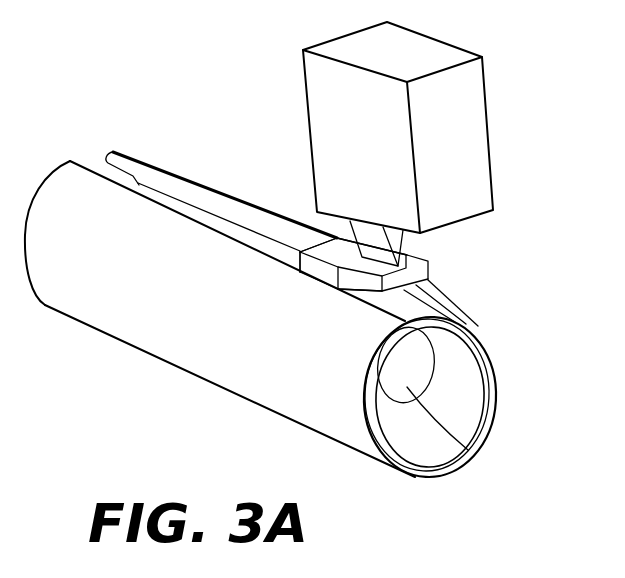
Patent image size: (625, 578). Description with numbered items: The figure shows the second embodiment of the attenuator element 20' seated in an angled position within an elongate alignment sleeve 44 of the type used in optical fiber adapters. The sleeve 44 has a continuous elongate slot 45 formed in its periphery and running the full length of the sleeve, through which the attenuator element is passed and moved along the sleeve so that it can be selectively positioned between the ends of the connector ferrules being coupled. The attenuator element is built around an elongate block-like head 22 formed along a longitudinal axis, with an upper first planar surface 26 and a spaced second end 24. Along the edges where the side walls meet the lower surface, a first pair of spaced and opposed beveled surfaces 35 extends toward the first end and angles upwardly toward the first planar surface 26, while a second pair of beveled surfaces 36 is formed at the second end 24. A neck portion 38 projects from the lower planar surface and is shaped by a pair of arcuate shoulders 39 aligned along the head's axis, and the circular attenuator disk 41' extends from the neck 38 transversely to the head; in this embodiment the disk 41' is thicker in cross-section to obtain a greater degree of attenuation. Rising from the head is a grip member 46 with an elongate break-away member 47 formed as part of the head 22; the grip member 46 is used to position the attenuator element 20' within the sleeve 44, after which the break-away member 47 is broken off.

The attenuator element (second embodiment) 20' is at (461, 198).
The head 22 is at (427, 267).
The second end 24 is at (402, 285).
The first planar surface 26 is at (318, 240).
The beveled surfaces 35 is at (318, 273).
The second beveled surfaces 36 is at (364, 307).
The neck portion 38 is at (481, 367).
The arcuate shoulders 39 is at (453, 317).
The attenuator disk 41' is at (466, 398).
The alignment sleeve 44 is at (150, 335).
The elongate slot 45 is at (110, 172).
The grip member 46 is at (465, 112).
The break-away member 47 is at (367, 233).